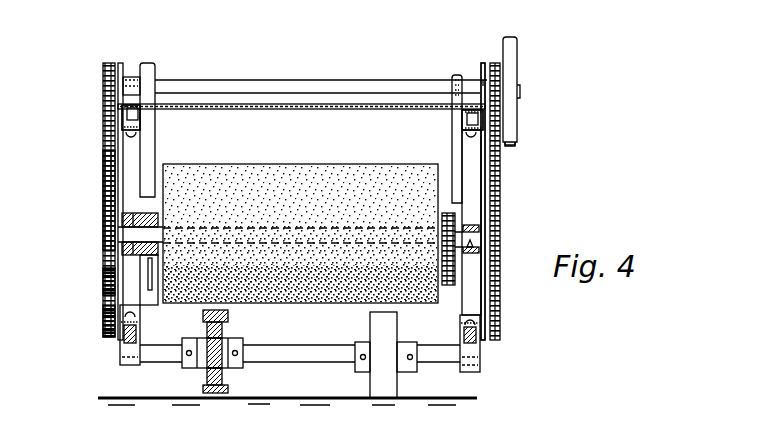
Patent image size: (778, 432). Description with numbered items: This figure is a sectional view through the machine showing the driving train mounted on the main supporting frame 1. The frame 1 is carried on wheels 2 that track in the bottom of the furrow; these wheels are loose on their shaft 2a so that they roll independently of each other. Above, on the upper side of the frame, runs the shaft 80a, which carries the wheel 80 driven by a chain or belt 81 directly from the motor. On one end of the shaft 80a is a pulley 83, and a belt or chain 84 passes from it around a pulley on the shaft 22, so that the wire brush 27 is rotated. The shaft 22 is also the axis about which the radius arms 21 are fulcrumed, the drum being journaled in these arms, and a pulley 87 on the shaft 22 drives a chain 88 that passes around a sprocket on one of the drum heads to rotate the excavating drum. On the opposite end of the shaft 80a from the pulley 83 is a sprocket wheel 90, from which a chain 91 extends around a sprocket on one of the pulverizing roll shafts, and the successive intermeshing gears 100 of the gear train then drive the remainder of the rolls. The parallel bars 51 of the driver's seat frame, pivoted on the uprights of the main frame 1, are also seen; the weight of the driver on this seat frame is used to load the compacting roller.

The main supporting frame 1 is at (120, 122).
The wheel 2 is at (226, 322).
The shaft 2a is at (297, 337).
The radius arm 21 is at (150, 278).
The shaft 22 is at (130, 233).
The wire brush 27 is at (355, 138).
The parallel bar 51 is at (152, 127).
The wheel 80 is at (512, 48).
The shaft 80a is at (290, 85).
The chain or belt 81 is at (510, 144).
The pulley 83 is at (113, 66).
The belt or chain 84 is at (108, 200).
The pulley 87 is at (457, 221).
The chain 88 is at (440, 273).
The sprocket wheel 90 is at (488, 66).
The chain 91 is at (485, 216).
The gear train 100 is at (103, 328).